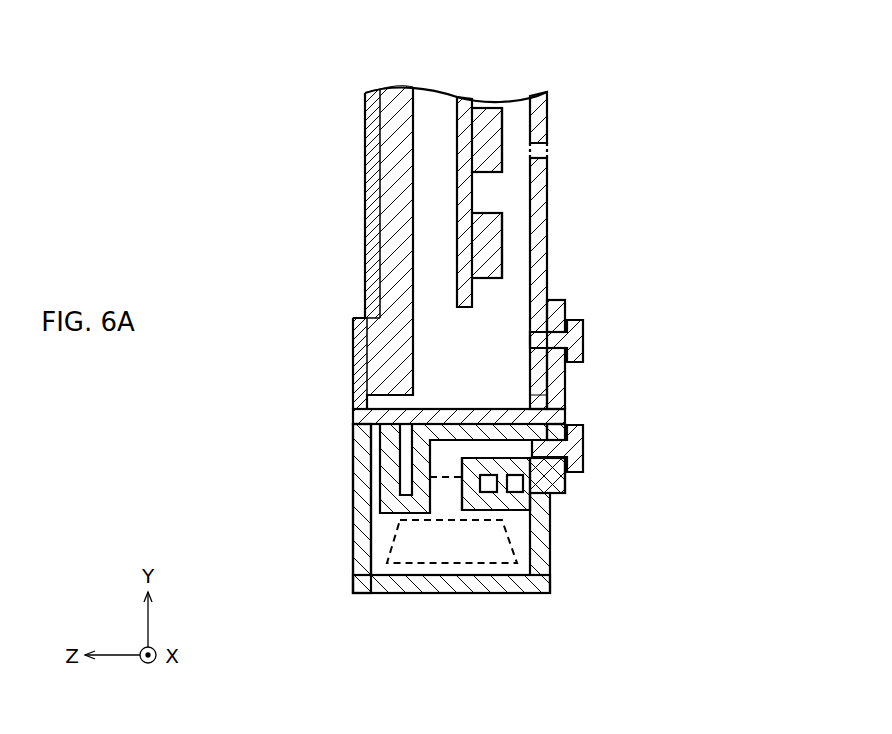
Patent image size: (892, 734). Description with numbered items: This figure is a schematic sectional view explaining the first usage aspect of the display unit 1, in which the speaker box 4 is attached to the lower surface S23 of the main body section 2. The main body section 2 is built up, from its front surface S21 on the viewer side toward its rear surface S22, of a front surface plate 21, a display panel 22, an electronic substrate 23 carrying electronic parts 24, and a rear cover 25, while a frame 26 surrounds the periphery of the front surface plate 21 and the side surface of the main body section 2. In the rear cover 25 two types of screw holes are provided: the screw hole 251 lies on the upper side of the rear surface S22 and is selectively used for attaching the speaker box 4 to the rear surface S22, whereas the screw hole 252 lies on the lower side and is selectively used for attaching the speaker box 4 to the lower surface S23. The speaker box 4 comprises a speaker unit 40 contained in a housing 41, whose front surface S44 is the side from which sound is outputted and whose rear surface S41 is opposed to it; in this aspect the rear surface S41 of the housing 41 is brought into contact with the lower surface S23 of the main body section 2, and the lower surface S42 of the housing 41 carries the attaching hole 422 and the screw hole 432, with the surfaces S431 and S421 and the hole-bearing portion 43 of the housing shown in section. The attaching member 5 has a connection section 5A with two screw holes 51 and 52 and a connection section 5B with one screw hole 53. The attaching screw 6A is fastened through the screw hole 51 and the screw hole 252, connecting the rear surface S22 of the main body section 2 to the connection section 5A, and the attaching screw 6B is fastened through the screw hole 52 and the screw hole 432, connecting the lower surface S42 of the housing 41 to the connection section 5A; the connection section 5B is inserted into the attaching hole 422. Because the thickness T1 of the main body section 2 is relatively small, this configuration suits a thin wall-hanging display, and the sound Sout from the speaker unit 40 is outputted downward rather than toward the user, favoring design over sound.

The display unit 1 is at (613, 75).
The main body section 2 is at (232, 93).
The front surface plate 21 is at (366, 287).
The display panel 22 is at (396, 92).
The electronic substrate 23 is at (462, 100).
The electronic parts 24 is at (492, 125).
The rear cover 25 is at (538, 186).
The frame 26 is at (354, 333).
The first main body screw hole 251 is at (553, 156).
The second main body screw hole 252 is at (543, 318).
The first member screw hole 51 is at (560, 318).
The attaching member 5 is at (574, 487).
The connection section 5A is at (557, 378).
The connection section 5B is at (557, 465).
The second member screw hole 52 is at (562, 464).
The third member screw hole 53 is at (516, 493).
The attaching screw 6A is at (593, 342).
The attaching screw 6B is at (593, 455).
The speaker box 4 is at (606, 610).
The speaker unit 40 is at (400, 600).
The housing 41 is at (356, 550).
The inner block 43 is at (343, 530).
The second speaker screw hole 432 is at (560, 428).
The second attaching hole 422 is at (493, 493).
The front surface S21 is at (357, 190).
The rear surface S22 is at (556, 213).
The lower surface S23 is at (417, 408).
The rear surface S41 is at (421, 432).
The lower surface S42 is at (556, 580).
The front surface S44 is at (372, 600).
The slot bottom surface S421 is at (402, 478).
The slot wall surface S431 is at (378, 462).
The sound Sout is at (455, 563).
The thickness T1 is at (353, 598).